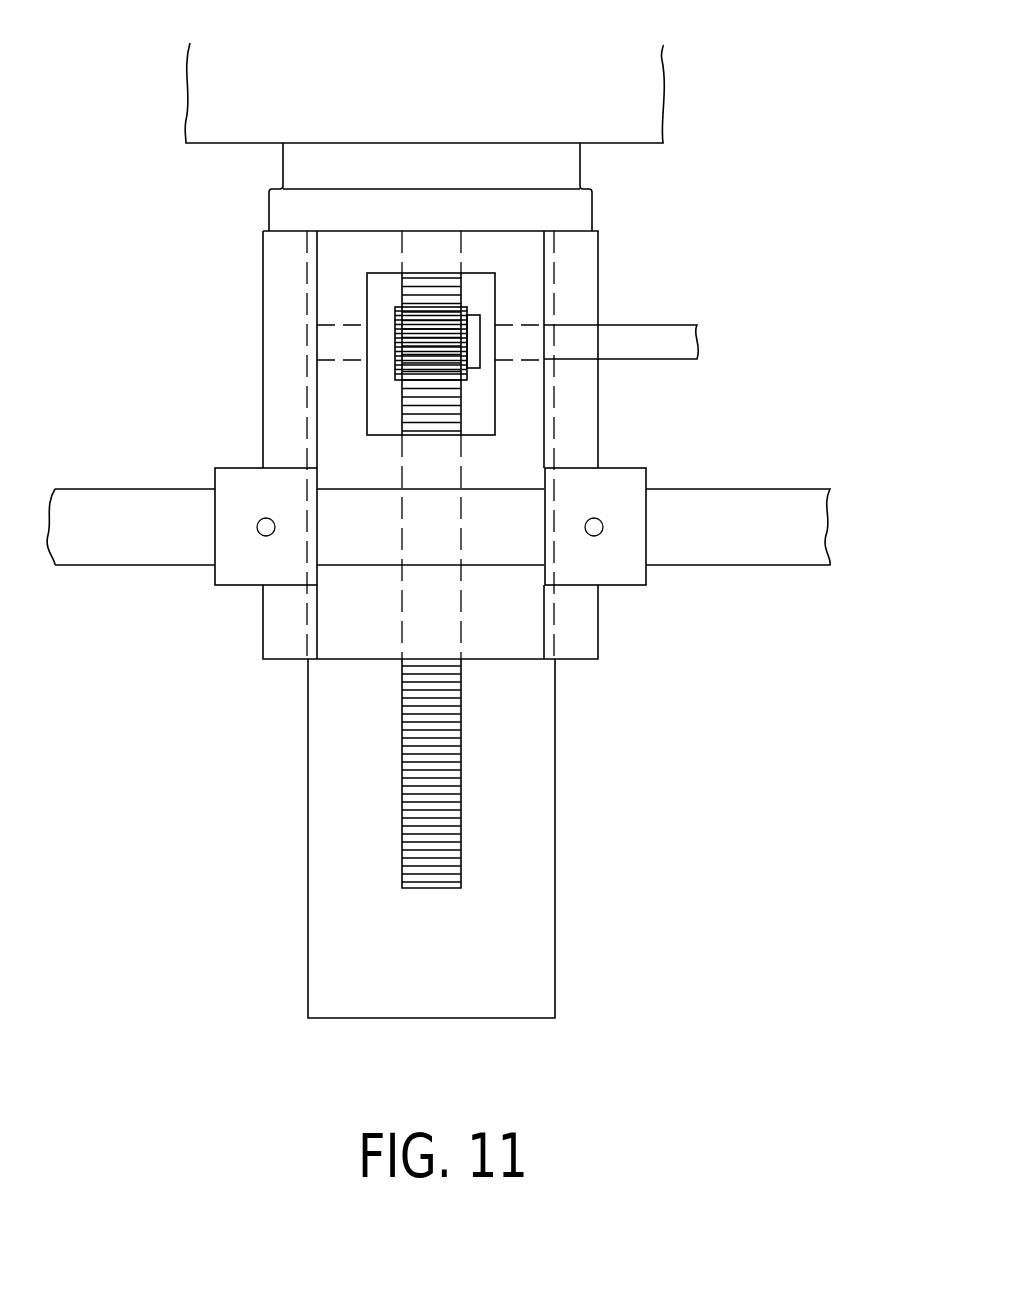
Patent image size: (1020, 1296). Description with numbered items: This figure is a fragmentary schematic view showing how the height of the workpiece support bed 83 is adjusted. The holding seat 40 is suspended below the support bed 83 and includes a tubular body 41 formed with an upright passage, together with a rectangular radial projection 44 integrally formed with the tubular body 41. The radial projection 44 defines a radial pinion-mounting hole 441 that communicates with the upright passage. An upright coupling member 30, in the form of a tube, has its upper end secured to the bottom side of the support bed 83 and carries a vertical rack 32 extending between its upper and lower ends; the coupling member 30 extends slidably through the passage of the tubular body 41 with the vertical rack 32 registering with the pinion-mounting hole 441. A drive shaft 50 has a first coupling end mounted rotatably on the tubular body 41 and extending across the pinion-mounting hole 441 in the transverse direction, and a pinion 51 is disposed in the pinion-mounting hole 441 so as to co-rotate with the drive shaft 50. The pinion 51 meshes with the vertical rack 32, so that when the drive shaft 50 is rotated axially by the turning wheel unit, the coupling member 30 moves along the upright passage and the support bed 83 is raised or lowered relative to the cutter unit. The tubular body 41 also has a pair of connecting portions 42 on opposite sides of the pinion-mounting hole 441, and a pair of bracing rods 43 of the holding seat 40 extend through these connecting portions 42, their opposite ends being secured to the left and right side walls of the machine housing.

The workpiece support bed 83 is at (630, 112).
The tubular body 41 is at (555, 267).
The holding seat 40 is at (263, 375).
The radial projection 44 is at (317, 258).
The pinion-mounting hole 441 is at (368, 295).
The vertical rack 32 is at (445, 287).
The pinion 51 is at (467, 380).
The drive shaft 50 is at (647, 325).
The connecting portions 42 is at (636, 490).
The bracing rods 43 is at (718, 555).
The coupling member 30 is at (555, 865).